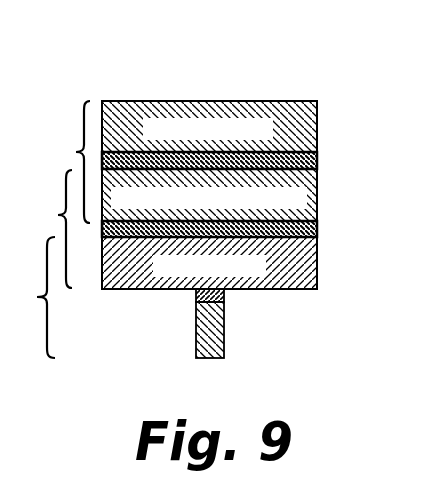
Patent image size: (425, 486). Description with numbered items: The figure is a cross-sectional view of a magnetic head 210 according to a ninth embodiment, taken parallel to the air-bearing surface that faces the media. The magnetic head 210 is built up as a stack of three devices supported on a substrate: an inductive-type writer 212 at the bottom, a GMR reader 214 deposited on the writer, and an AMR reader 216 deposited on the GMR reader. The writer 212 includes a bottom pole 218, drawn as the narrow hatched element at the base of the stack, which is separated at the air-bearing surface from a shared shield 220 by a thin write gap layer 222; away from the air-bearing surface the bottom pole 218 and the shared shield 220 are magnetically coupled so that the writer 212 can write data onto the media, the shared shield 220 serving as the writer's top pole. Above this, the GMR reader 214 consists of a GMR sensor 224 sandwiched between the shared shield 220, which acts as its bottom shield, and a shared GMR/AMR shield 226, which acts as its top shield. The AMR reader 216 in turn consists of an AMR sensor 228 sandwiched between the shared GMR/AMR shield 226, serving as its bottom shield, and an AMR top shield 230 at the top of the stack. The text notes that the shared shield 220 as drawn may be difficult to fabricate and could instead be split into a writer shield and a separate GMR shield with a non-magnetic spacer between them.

The magnetic head 210 is at (313, 68).
The inductive-type writer 212 is at (29, 297).
The GMR reader 214 is at (46, 229).
The AMR reader 216 is at (63, 162).
The bottom pole 218 is at (226, 330).
The shared shield 220 is at (318, 268).
The write gap layer 222 is at (230, 296).
The GMR sensor 224 is at (318, 245).
The shared GMR/AMR shield 226 is at (318, 200).
The AMR sensor 228 is at (318, 178).
The AMR top shield 230 is at (318, 125).